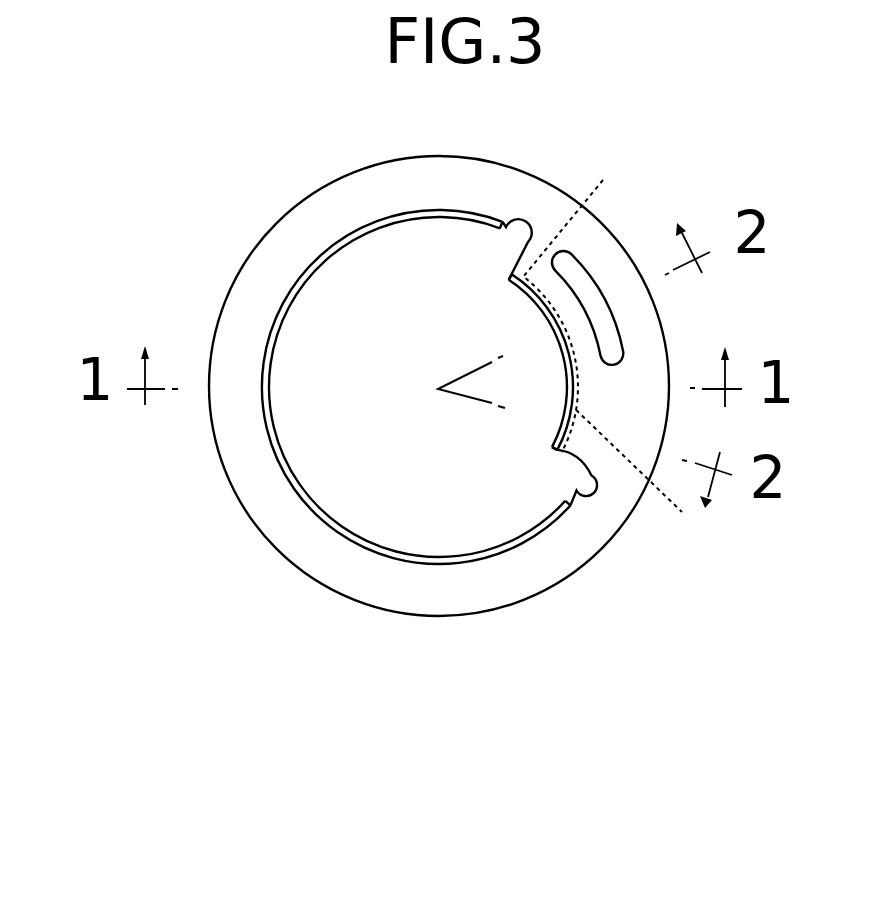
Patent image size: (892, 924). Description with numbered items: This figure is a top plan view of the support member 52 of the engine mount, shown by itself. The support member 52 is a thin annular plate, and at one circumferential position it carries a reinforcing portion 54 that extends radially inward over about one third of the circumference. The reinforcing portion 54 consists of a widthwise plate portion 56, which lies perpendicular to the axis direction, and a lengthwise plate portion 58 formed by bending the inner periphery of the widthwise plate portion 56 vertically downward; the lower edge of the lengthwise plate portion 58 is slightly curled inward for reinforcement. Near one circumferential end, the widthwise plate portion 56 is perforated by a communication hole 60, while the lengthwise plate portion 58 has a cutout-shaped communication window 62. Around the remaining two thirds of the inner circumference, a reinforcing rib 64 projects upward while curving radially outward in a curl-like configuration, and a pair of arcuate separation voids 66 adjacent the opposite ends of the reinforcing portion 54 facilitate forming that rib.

The support member 52 is at (620, 220).
The reinforcing portion 54 is at (567, 460).
The widthwise plate portion 56 is at (588, 437).
The lengthwise plate portion 58 is at (577, 304).
The communication hole 60 is at (614, 341).
The communication window 62 is at (642, 477).
The reinforcing rib 64 is at (345, 245).
The separation void 66 is at (517, 235).